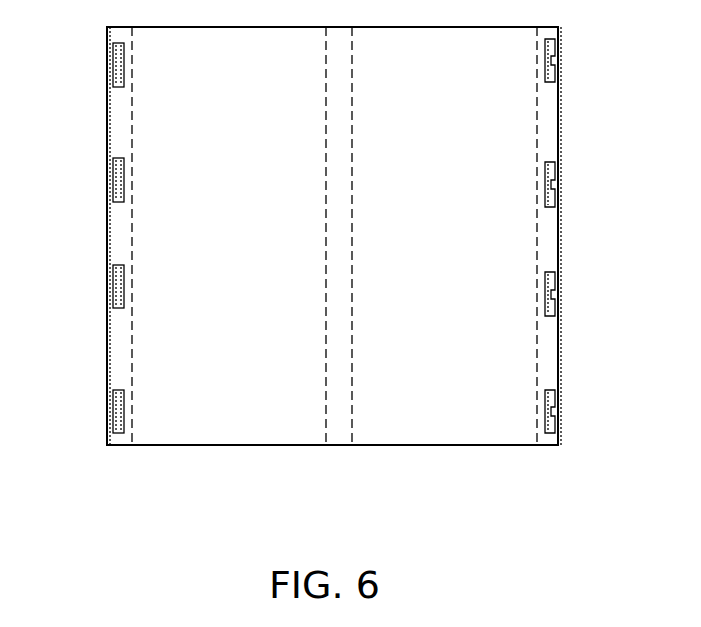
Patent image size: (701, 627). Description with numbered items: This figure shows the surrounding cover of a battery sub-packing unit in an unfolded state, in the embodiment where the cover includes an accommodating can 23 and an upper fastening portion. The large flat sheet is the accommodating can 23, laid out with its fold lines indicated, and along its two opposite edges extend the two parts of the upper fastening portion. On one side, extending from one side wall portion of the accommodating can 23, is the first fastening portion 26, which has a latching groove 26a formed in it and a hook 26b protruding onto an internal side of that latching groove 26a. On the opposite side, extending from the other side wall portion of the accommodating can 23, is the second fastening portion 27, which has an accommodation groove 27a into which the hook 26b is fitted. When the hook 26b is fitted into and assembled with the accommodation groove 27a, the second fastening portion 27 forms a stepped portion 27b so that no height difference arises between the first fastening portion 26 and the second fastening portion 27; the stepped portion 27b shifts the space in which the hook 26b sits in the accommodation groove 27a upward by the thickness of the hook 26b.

The accommodating can 23 is at (220, 432).
The second fastening portion 27 is at (112, 359).
The accommodation groove 27a is at (118, 408).
The stepped portion 27b is at (115, 426).
The first fastening portion 26 is at (553, 359).
The hook 26b is at (553, 407).
The latching groove 26a is at (551, 426).